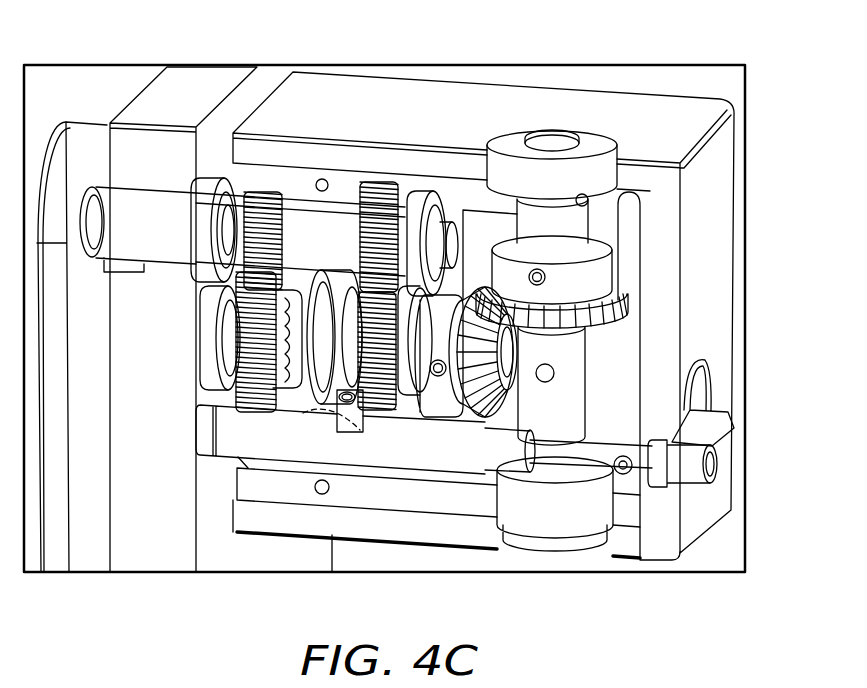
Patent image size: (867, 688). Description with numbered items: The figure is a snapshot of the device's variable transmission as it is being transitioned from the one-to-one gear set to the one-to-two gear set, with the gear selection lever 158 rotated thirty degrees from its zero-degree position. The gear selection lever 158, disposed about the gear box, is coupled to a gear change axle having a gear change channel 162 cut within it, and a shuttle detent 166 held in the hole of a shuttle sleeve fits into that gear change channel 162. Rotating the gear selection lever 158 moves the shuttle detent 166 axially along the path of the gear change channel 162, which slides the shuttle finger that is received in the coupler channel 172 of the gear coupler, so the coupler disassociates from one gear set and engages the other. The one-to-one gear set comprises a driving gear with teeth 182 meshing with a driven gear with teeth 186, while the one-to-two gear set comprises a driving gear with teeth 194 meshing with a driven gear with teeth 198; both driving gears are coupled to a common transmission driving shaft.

The gear selection lever 158 is at (722, 448).
The gear change channel 162 is at (333, 425).
The shuttle detent 166 is at (345, 432).
The coupler channel 172 is at (338, 287).
The teeth 182 is at (390, 183).
The teeth 186 is at (386, 412).
The teeth 194 is at (268, 195).
The teeth 198 is at (212, 391).